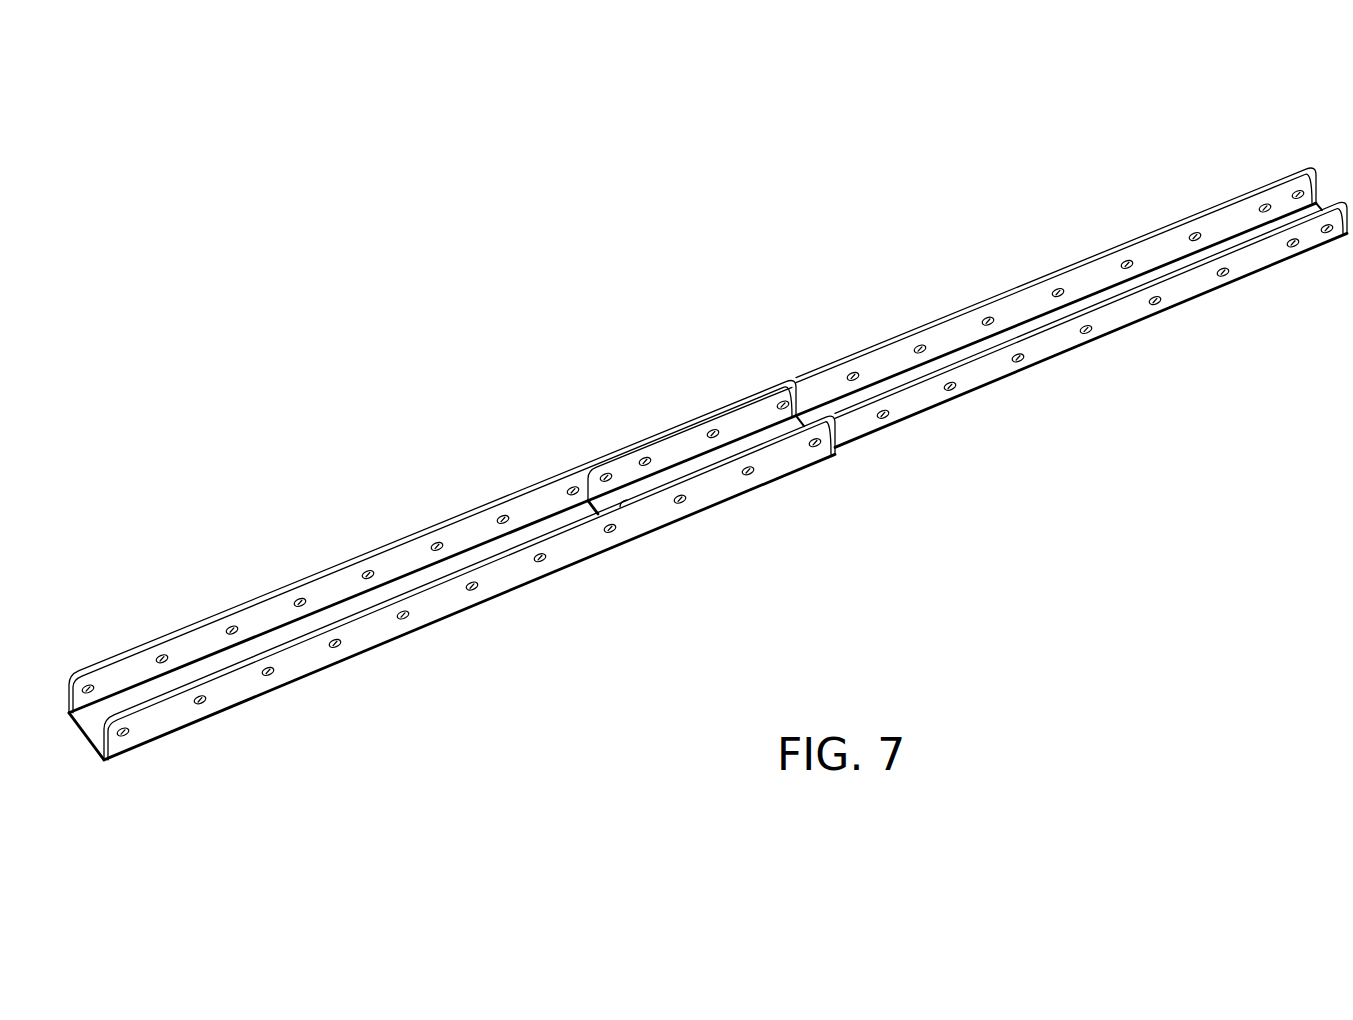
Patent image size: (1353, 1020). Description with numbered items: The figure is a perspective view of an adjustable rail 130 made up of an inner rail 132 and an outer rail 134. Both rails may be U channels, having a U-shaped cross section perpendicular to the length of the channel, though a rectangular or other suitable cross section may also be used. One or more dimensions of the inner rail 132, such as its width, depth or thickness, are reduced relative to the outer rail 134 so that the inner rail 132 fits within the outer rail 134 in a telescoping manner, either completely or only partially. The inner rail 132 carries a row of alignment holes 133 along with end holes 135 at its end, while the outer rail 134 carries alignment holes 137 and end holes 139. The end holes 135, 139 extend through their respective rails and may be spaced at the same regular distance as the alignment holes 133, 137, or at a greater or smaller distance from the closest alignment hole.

The rail 130 is at (444, 262).
The inner rail 132 is at (985, 370).
The alignment holes 133 is at (1053, 293).
The outer rail 134 is at (372, 632).
The end holes 135 is at (1324, 222).
The alignment holes 137 is at (432, 545).
The end holes 139 is at (124, 728).